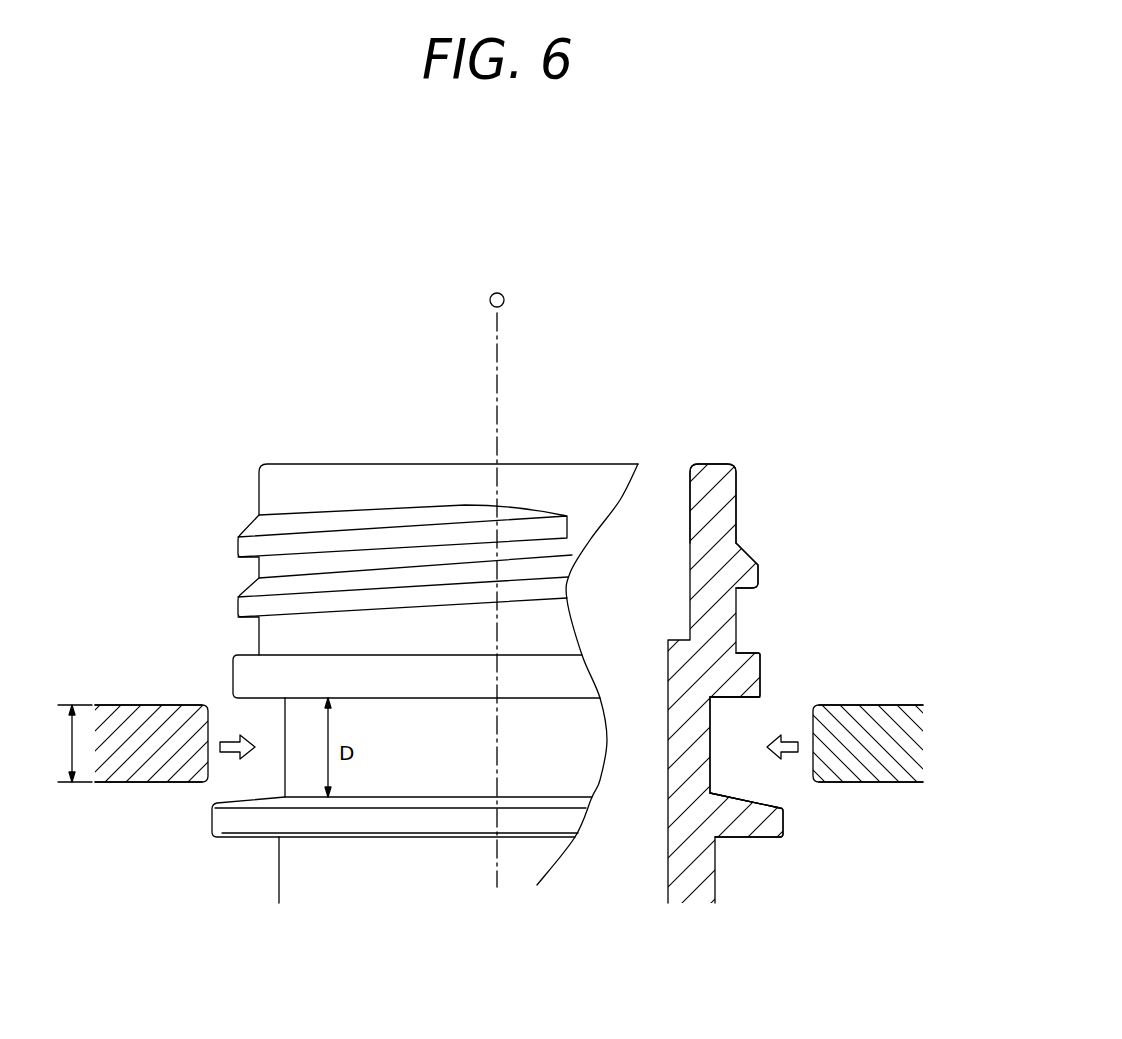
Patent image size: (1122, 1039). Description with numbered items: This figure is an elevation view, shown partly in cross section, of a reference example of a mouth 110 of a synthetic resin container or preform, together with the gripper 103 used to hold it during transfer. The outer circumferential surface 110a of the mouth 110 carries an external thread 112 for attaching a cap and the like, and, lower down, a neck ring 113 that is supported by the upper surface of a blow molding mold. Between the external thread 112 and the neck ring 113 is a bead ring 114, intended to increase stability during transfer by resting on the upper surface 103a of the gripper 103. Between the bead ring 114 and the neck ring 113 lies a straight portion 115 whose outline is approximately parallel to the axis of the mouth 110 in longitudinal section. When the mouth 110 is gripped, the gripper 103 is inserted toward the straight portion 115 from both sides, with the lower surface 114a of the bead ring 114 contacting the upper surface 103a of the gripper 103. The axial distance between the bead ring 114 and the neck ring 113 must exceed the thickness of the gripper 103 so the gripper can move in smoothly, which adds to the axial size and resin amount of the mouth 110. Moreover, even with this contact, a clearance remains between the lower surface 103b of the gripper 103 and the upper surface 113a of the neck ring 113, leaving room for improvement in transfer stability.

The gripper 103 is at (112, 705).
The upper surface of the gripper 103a is at (188, 705).
The lower surface of the gripper 103b is at (152, 782).
The mouth 110 is at (755, 603).
The outer circumferential surface 110a is at (736, 492).
The external thread 112 is at (752, 563).
The neck ring 113 is at (782, 822).
The upper surface of the neck ring 113a is at (780, 798).
The bead ring 114 is at (762, 676).
The lower surface of the bead ring 114a is at (712, 700).
The straight portion 115 is at (710, 775).